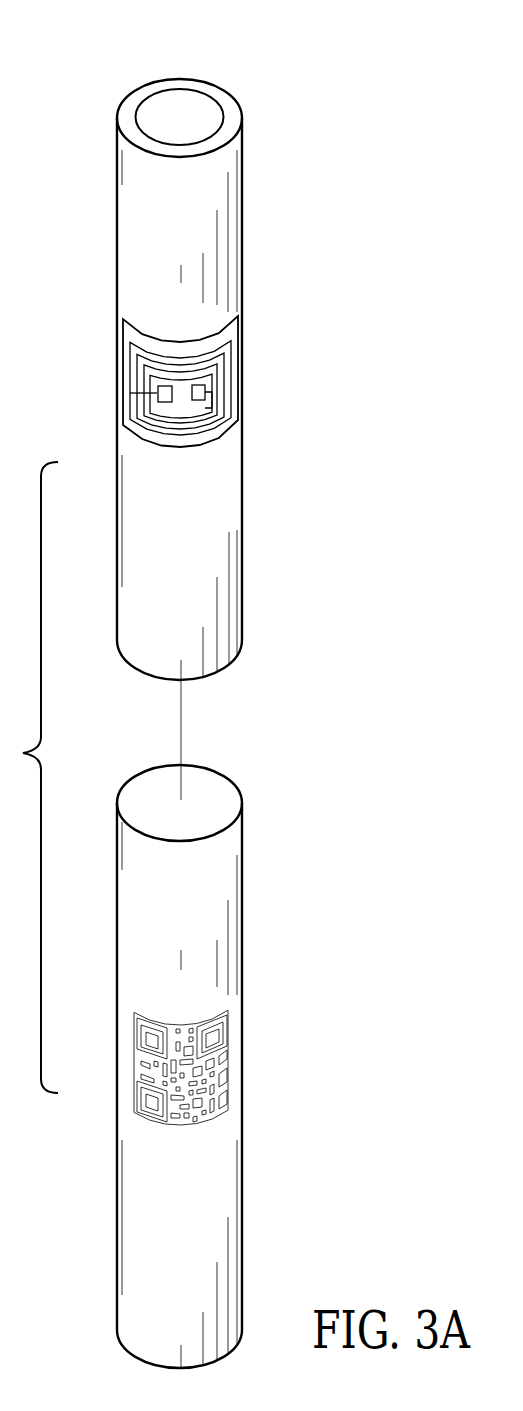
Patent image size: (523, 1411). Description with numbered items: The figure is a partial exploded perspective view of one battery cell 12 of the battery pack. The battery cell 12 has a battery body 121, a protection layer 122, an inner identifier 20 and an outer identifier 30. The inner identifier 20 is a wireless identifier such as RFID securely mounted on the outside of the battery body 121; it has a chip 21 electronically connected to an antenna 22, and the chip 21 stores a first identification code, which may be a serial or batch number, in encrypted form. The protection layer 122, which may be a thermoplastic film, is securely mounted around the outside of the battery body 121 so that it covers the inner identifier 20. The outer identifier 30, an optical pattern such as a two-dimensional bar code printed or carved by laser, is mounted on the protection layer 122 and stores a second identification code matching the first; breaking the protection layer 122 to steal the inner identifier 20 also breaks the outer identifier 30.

The battery cell 12 is at (253, 86).
The battery body 121 is at (205, 125).
The protection layer 122 is at (222, 885).
The inner identifier 20 is at (230, 330).
The chip 21 is at (197, 384).
The antenna 22 is at (228, 420).
The outer identifier 30 is at (222, 1080).